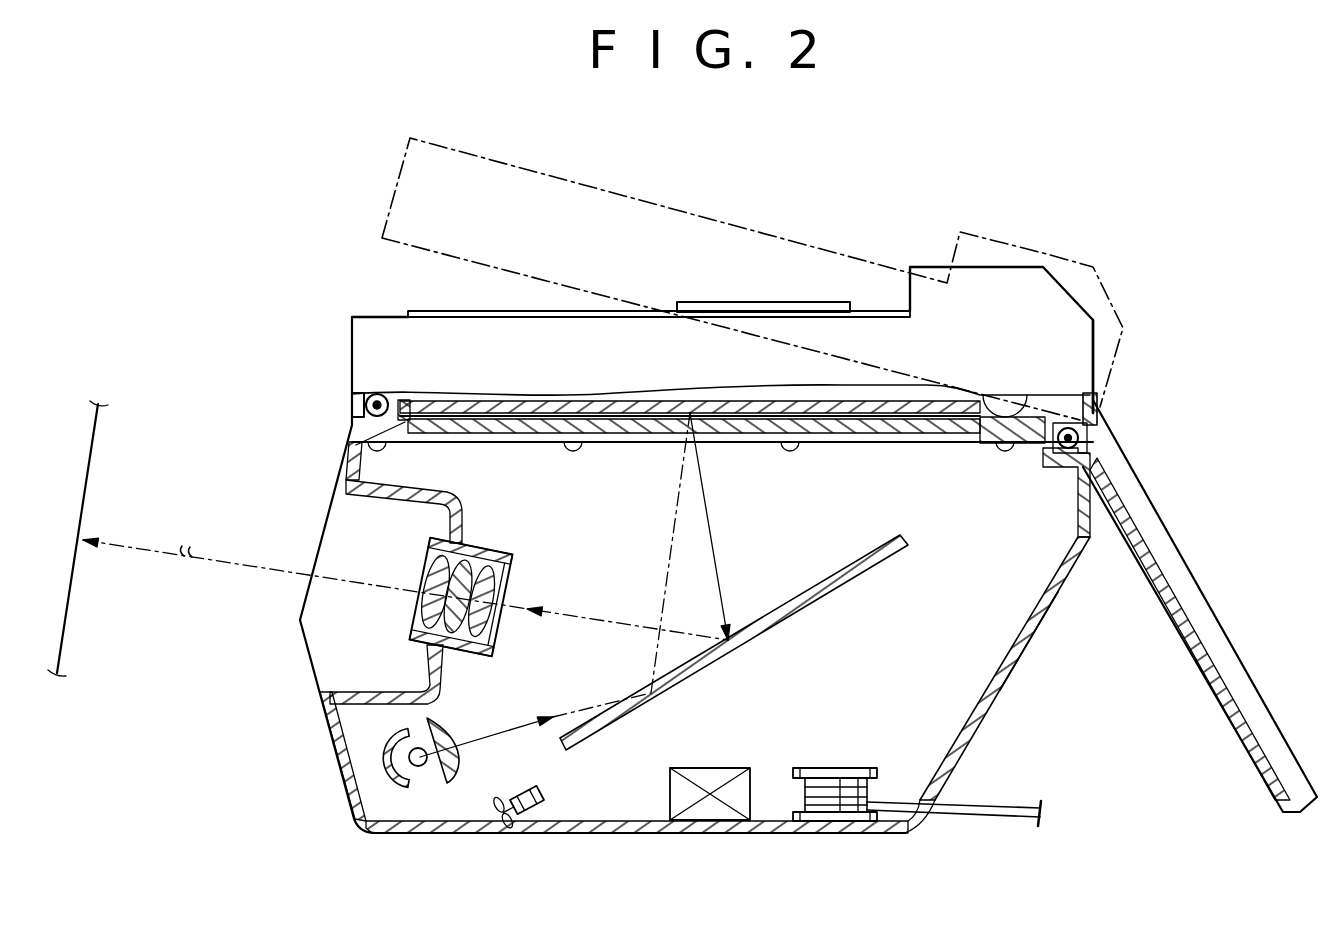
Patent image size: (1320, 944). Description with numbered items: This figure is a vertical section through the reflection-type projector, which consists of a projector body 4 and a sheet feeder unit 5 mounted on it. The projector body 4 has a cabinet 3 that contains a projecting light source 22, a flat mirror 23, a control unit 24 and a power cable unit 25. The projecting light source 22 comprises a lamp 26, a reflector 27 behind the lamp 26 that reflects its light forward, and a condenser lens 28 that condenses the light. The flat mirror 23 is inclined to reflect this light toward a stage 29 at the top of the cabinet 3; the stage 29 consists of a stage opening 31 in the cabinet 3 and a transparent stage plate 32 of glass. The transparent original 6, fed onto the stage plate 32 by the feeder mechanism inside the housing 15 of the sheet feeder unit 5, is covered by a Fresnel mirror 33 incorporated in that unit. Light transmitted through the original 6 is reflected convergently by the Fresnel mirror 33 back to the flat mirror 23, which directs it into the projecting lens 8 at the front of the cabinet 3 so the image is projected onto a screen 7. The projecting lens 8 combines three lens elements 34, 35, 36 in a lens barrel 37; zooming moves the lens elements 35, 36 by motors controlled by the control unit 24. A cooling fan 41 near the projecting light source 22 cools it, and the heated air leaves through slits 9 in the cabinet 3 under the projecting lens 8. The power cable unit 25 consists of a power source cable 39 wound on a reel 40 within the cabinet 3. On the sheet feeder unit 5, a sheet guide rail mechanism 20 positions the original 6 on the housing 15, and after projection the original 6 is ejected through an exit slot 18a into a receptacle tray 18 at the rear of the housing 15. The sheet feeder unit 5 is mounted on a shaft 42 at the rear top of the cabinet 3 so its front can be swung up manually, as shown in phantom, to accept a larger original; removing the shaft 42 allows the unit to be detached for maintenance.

The cabinet 3 is at (1058, 600).
The projector body 4 is at (985, 720).
The sheet feeder unit 5 is at (993, 233).
The original sheet 6 is at (432, 312).
The screen 7 is at (88, 470).
The projecting lens 8 is at (457, 580).
The slits 9 is at (338, 773).
The housing 15 is at (1090, 352).
The receptacle tray 18 is at (1253, 688).
The exit slot 18a is at (1097, 418).
The sheet guide rail mechanism 20 is at (752, 298).
The projecting light source 22 is at (449, 817).
The flat mirror 23 is at (830, 590).
The control unit 24 is at (713, 768).
The power cable unit 25 is at (855, 754).
The lamp 26 is at (428, 782).
The reflector 27 is at (392, 790).
The condenser lens 28 is at (477, 796).
The stage 29 is at (410, 410).
The stage opening 31 is at (965, 445).
The transparent stage plate 32 is at (890, 432).
The Fresnel mirror 33 is at (430, 400).
The lens element 34 is at (428, 582).
The lens element 35 is at (466, 650).
The lens element 36 is at (500, 578).
The lens barrel 37 is at (480, 546).
The power source cable 39 is at (1003, 815).
The reel 40 is at (823, 768).
The cooling fan 41 is at (553, 793).
The shaft 42 is at (1085, 443).